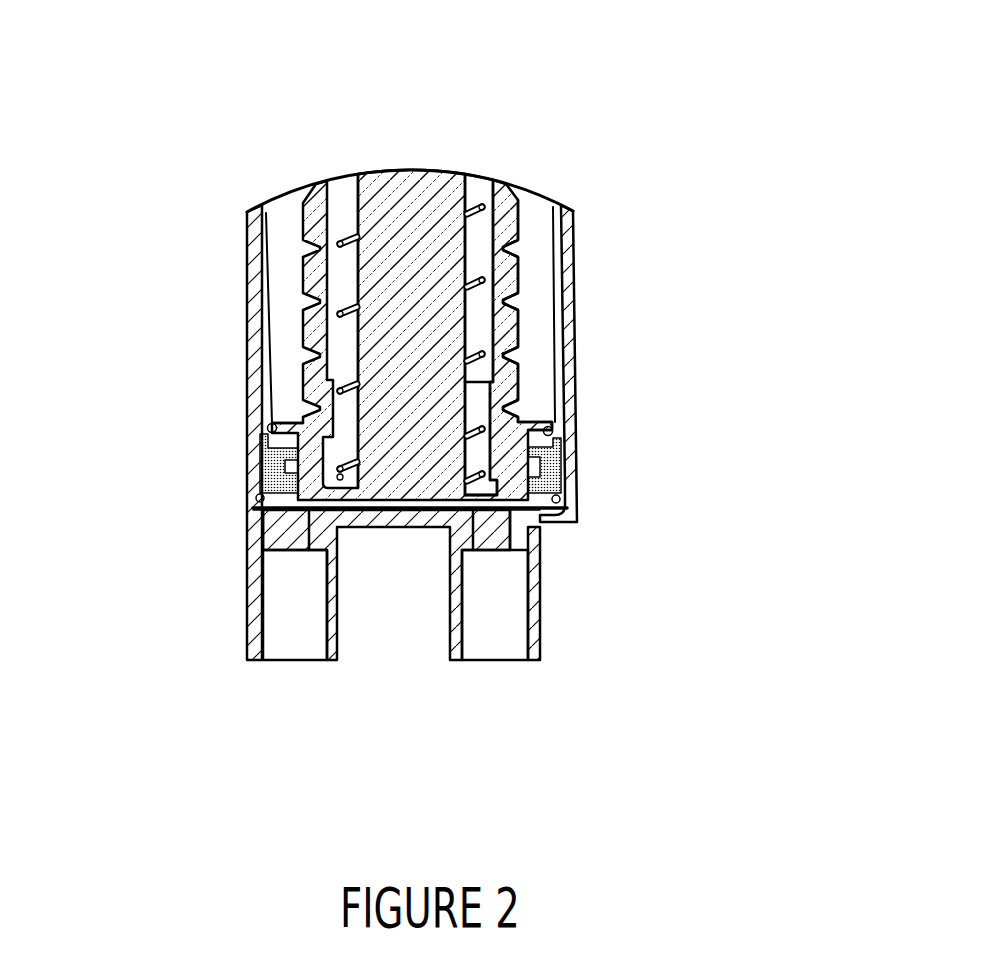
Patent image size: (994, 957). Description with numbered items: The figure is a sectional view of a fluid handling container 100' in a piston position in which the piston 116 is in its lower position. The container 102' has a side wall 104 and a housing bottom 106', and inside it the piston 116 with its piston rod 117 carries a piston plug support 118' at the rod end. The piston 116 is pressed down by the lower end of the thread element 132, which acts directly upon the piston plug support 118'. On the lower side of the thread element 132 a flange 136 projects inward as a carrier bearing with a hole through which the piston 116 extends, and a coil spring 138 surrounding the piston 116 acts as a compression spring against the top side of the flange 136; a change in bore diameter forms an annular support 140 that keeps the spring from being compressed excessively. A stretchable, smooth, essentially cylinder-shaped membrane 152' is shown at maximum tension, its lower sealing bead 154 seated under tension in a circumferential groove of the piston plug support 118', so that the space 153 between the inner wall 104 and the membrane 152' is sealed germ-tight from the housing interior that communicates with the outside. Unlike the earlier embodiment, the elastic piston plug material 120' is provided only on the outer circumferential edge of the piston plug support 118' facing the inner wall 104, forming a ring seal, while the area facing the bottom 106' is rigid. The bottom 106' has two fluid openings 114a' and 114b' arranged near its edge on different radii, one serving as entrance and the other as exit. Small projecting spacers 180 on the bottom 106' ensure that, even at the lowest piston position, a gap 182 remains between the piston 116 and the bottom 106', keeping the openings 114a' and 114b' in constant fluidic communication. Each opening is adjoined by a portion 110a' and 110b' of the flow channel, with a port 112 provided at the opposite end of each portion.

The fluid handling container 100' is at (514, 111).
The container 102' is at (645, 363).
The side wall 104 is at (252, 278).
The housing bottom 106' is at (386, 620).
The portion of the flow channel 110a' is at (218, 553).
The portion of the flow channel 110b' is at (588, 544).
The port 112 is at (505, 622).
The fluid opening 114a' is at (176, 528).
The fluid opening 114b' is at (597, 507).
The piston 116 is at (417, 190).
The piston rod 117 is at (477, 172).
The piston plug support 118' is at (418, 434).
The elastic piston plug material 120' is at (625, 465).
The thread element 132 is at (507, 210).
The flange 136 is at (488, 500).
The coil spring 138 is at (480, 207).
The annular support 140 is at (490, 372).
The membrane 152' is at (606, 314).
The space 153 is at (265, 385).
The lower sealing bead 154 is at (565, 424).
The spacers 180 is at (337, 513).
The gap 182 is at (297, 461).